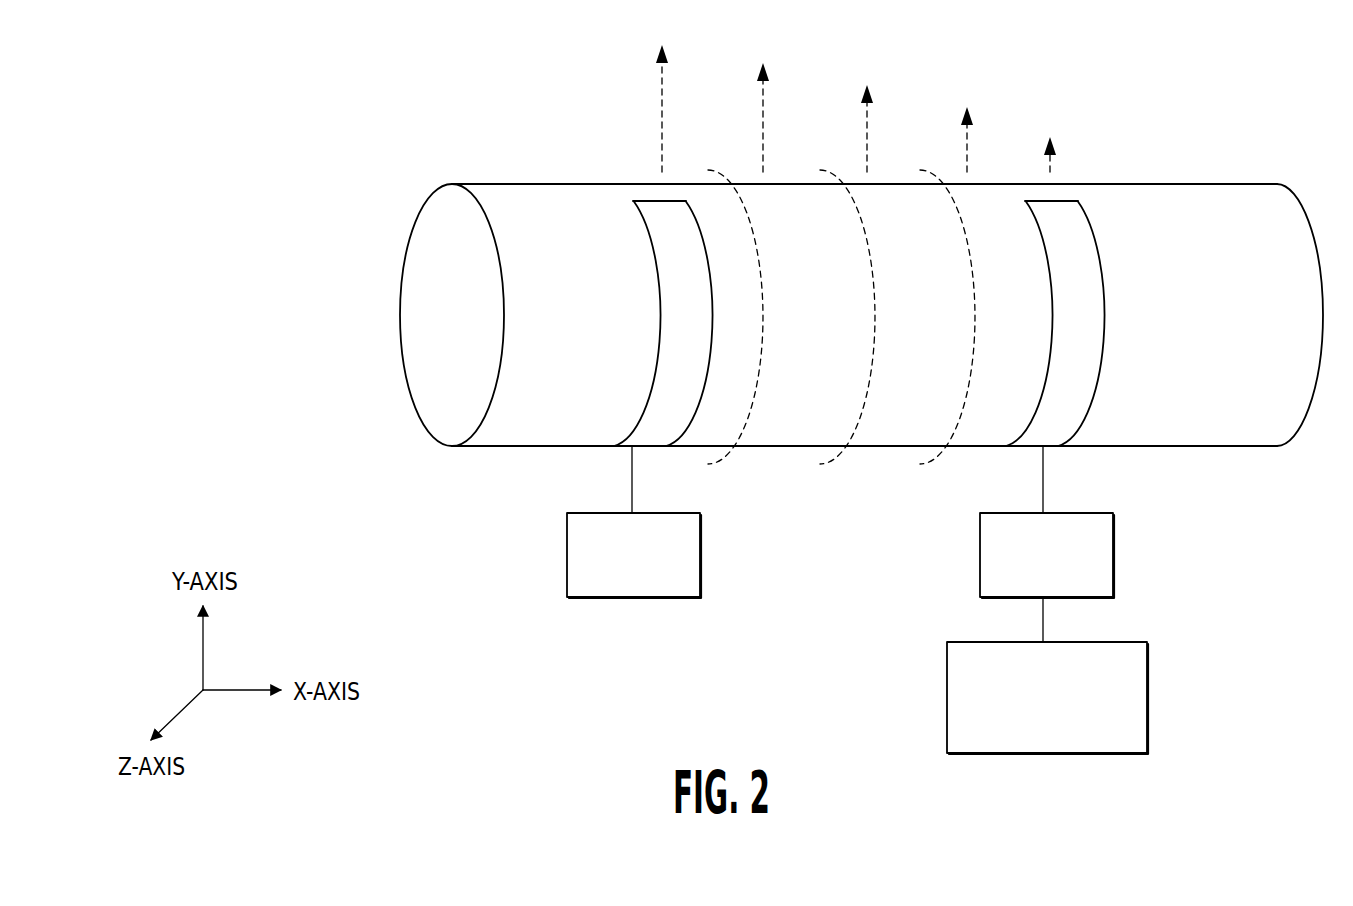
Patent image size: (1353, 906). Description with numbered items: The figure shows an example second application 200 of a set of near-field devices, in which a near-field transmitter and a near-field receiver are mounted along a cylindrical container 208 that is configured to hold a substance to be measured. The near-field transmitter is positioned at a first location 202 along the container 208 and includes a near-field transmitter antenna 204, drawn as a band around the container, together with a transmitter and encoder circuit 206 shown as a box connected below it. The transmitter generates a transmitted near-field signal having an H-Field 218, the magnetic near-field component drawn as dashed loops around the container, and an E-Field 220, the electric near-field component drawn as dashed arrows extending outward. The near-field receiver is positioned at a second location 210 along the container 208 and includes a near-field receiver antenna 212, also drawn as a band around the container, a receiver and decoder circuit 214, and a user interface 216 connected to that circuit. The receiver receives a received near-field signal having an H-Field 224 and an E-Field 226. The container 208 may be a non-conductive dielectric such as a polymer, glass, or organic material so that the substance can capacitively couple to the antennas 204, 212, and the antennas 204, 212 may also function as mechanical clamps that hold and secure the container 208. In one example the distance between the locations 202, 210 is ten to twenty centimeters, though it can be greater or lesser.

The second application 200 is at (313, 152).
The first location 202 is at (606, 458).
The near-field transmitter antenna 204 is at (660, 347).
The transmitter and encoder circuit 206 is at (621, 600).
The container 208 is at (1247, 183).
The second location 210 is at (1057, 452).
The near-field receiver antenna 212 is at (1100, 325).
The receiver and decoder circuit 214 is at (978, 580).
The user interface 216 is at (945, 695).
The H-Field 218 is at (763, 280).
The E-Field 220 is at (656, 62).
The H-Field 224 is at (975, 305).
The E-Field 226 is at (1055, 138).